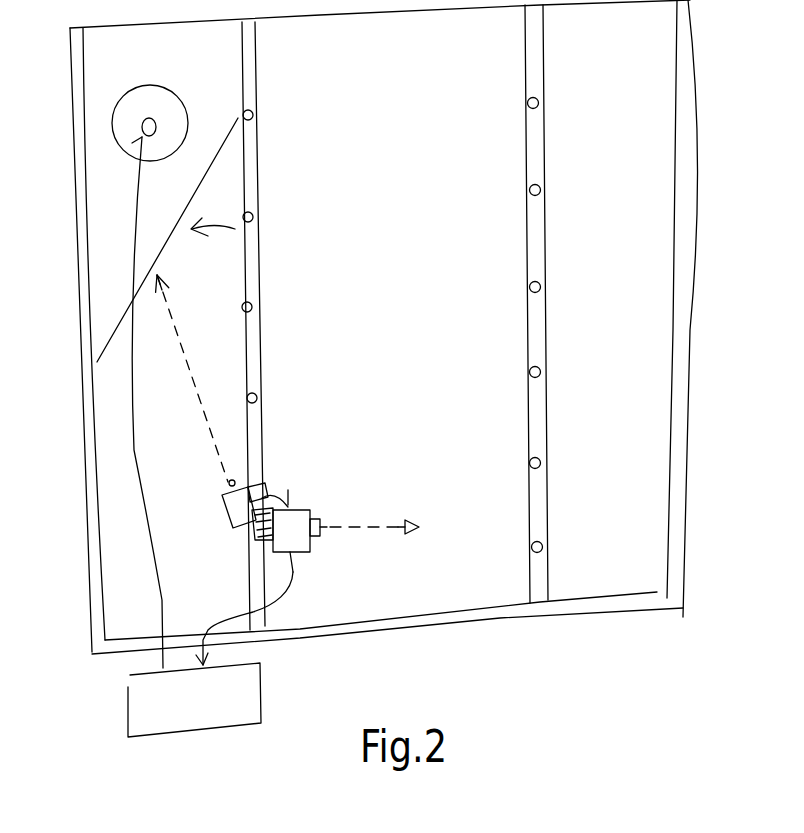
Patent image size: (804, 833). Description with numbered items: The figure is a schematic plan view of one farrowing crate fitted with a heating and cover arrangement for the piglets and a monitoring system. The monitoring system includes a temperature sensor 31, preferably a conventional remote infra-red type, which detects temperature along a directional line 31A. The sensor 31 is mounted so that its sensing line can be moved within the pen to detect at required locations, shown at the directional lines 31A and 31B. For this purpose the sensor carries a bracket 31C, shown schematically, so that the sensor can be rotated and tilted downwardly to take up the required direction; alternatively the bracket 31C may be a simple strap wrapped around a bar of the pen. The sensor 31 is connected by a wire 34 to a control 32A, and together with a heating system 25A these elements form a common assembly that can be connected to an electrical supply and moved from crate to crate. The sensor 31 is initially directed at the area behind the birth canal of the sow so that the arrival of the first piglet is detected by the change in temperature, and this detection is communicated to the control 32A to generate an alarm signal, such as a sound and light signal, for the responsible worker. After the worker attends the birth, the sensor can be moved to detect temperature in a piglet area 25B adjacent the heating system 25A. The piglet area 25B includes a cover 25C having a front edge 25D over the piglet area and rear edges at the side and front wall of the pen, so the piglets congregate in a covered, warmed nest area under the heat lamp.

The heating system 25A is at (187, 121).
The piglet area 25B is at (235, 229).
The cover 25C is at (190, 182).
The front edge 25D is at (120, 313).
The temperature sensor 31 is at (230, 508).
The directional line 31A is at (193, 370).
The directional line 31B is at (405, 470).
The bracket 31C is at (266, 485).
The control 32A is at (128, 702).
The wire 34 is at (291, 578).